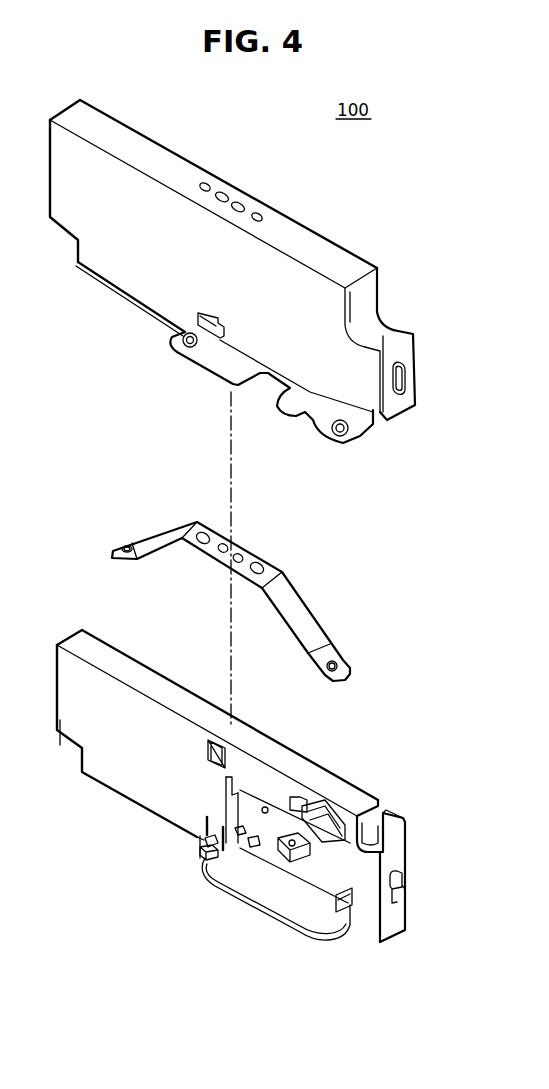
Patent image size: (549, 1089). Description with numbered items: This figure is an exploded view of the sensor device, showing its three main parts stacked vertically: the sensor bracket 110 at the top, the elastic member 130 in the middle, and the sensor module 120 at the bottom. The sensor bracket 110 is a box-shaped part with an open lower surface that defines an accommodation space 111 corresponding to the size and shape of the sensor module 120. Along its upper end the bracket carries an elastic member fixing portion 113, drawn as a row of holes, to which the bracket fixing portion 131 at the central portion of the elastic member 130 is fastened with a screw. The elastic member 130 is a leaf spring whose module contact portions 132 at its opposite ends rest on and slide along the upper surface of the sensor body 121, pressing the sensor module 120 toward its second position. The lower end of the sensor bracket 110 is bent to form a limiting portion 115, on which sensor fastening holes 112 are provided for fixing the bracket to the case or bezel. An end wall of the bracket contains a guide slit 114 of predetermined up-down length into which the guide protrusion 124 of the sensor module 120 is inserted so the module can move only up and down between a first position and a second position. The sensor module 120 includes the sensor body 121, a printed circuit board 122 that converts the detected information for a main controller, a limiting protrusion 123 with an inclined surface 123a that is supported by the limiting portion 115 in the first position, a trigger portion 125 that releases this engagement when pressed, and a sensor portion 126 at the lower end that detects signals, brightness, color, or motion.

The sensor bracket 110 is at (423, 342).
The accommodation space 111 is at (358, 296).
The sensor fastening hole 112 is at (180, 339).
The elastic member fixing portion 113 is at (238, 204).
The guide slit 114 is at (404, 380).
The limiting portion 115 is at (212, 357).
The sensor module 120 is at (378, 793).
The sensor body 121 is at (92, 755).
The printed circuit board 122 is at (268, 850).
The limiting protrusion 123 is at (196, 852).
The inclined surface 123a is at (207, 836).
The guide protrusion 124 is at (404, 880).
The trigger portion 125 is at (205, 857).
The sensor portion 126 is at (300, 938).
The elastic member 130 is at (303, 593).
The bracket fixing portion 131 is at (223, 543).
The module contact portion 132 is at (119, 550).